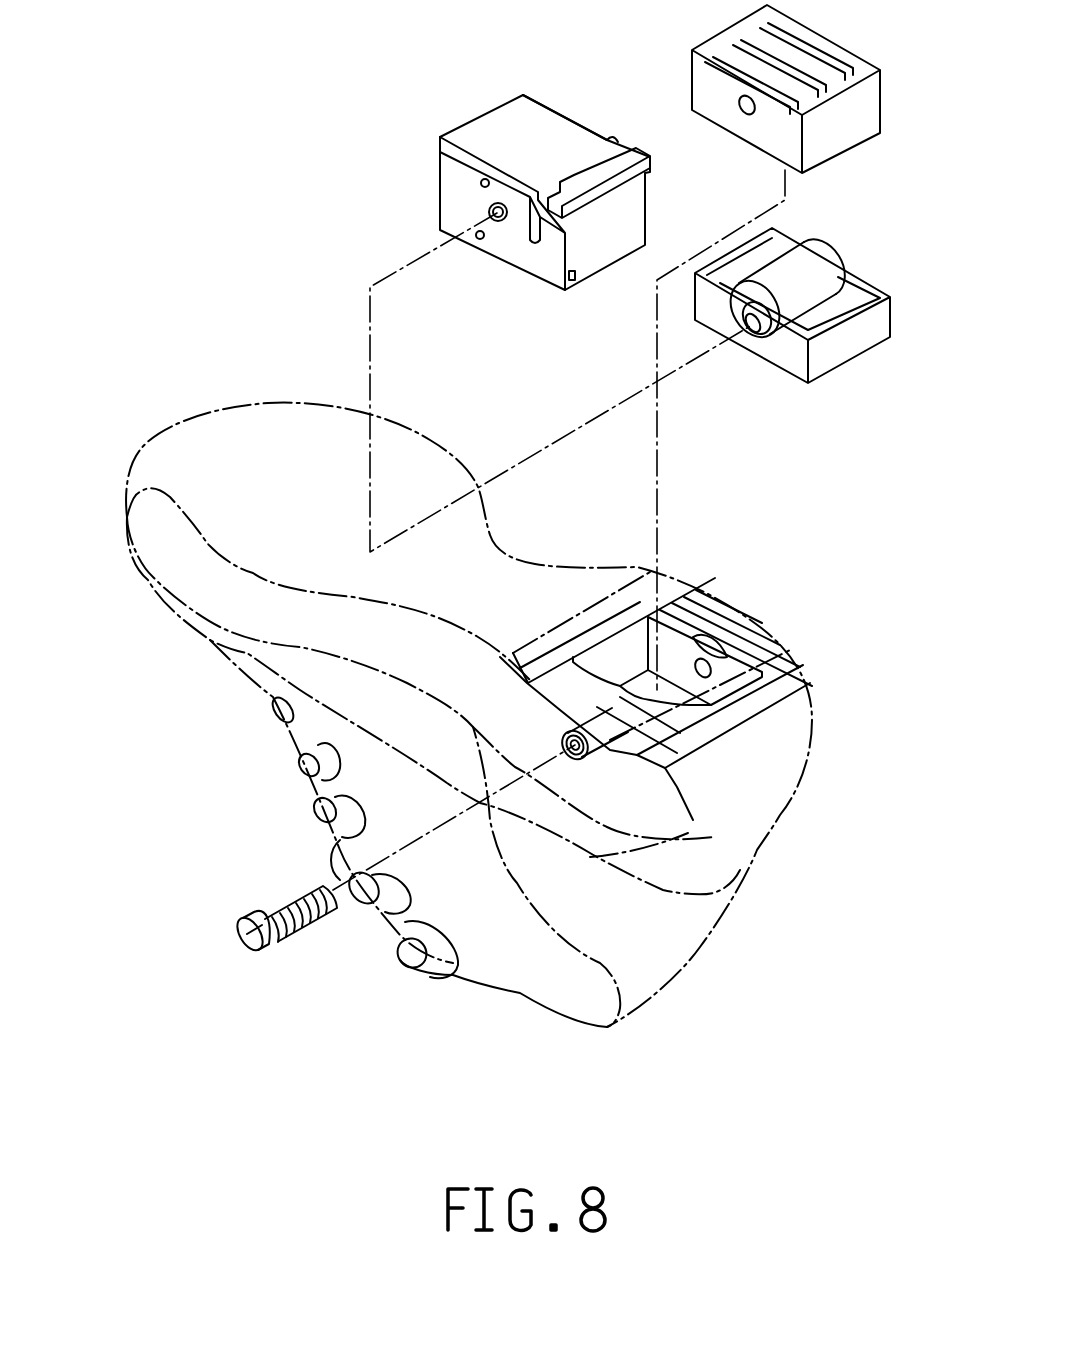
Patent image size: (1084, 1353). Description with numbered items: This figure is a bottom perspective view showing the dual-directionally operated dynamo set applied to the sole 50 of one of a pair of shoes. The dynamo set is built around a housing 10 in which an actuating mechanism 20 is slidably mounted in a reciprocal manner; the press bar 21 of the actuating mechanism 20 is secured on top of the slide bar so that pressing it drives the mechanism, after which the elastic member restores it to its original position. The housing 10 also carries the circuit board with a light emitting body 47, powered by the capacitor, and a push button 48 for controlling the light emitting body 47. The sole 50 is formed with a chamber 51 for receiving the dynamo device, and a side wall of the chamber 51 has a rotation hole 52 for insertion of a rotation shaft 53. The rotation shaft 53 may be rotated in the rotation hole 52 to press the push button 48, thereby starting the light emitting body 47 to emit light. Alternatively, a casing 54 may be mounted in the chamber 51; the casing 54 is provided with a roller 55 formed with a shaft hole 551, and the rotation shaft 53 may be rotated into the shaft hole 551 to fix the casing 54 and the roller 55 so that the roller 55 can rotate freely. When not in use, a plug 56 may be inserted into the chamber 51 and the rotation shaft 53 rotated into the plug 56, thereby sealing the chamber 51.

The housing 10 is at (567, 198).
The actuating mechanism 20 is at (567, 108).
The press bar 21 is at (612, 170).
The light emitting body 47 is at (484, 178).
The push button 48 is at (478, 240).
The sole 50 is at (501, 721).
The chamber 51 is at (770, 690).
The rotation hole 52 is at (600, 765).
The rotation shaft 53 is at (303, 927).
The casing 54 is at (792, 327).
The roller 55 is at (802, 326).
The shaft hole 551 is at (752, 334).
The plug 56 is at (857, 48).